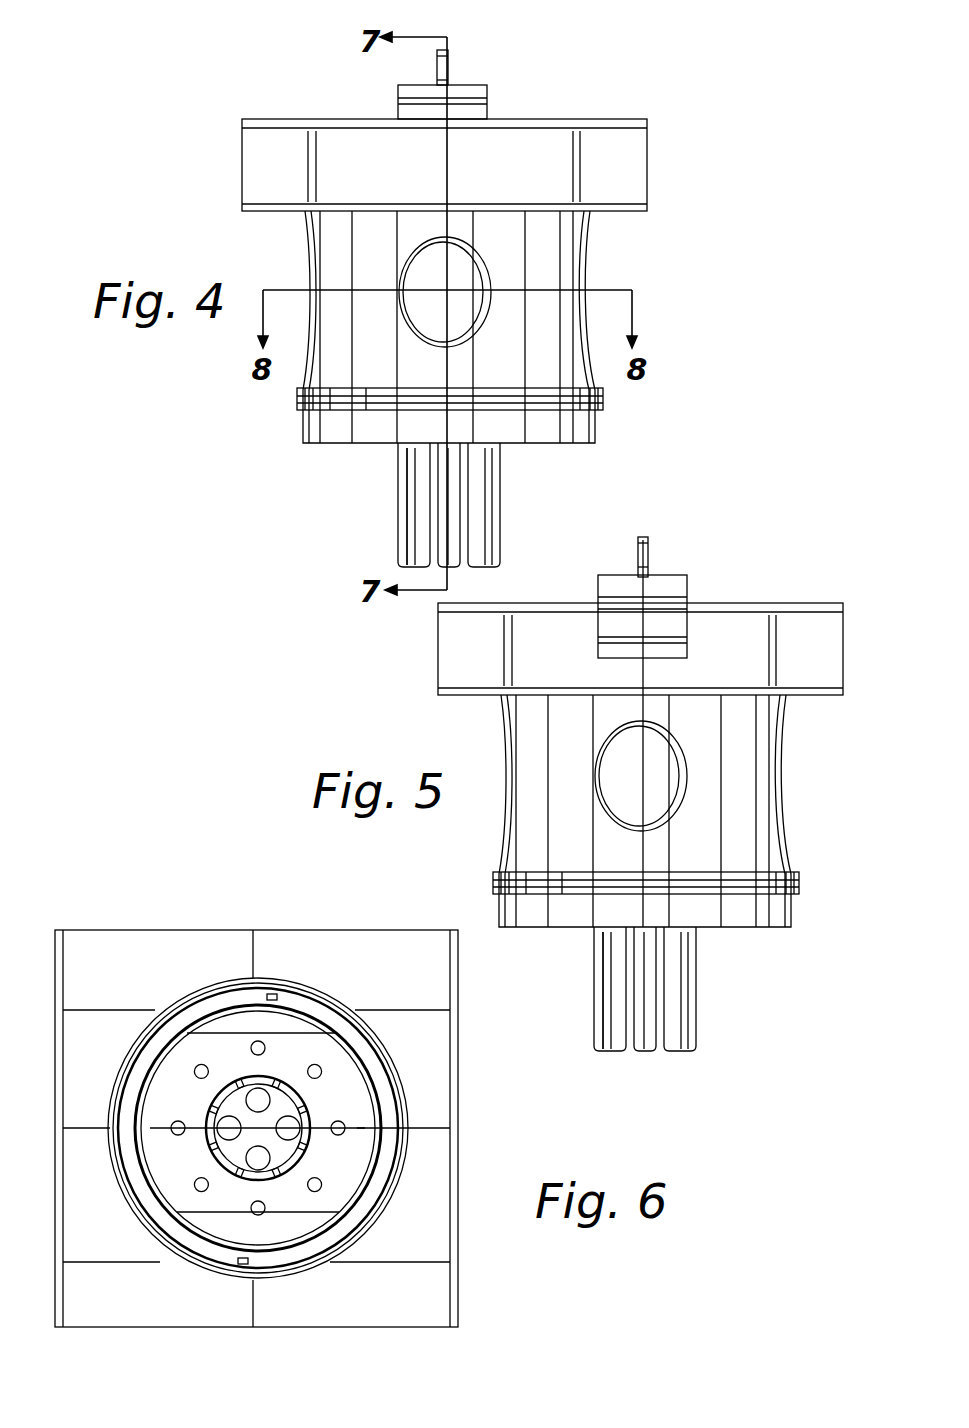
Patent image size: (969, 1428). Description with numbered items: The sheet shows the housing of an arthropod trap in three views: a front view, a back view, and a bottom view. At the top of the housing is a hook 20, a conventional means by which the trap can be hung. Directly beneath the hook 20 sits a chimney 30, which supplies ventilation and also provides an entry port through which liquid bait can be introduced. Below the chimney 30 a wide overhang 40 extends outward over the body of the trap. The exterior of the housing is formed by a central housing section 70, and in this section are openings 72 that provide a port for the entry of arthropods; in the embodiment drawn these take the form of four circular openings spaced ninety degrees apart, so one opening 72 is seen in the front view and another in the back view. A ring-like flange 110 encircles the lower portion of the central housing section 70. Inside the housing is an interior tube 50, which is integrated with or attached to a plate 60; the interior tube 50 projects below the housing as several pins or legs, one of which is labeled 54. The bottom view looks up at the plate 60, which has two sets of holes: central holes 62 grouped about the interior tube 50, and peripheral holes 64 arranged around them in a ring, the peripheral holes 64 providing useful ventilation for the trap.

In FIG. 4, the hook 20 is at (448, 72).
In FIG. 5, the hook 20 is at (648, 552).
In FIG. 4, the chimney 30 is at (490, 108).
In FIG. 5, the chimney 30 is at (690, 585).
In FIG. 4, the overhang 40 is at (647, 172).
In FIG. 5, the overhang 40 is at (845, 665).
In FIG. 6, the overhang 40 is at (425, 1305).
In FIG. 4, the interior tube 50 is at (500, 510).
In FIG. 5, the interior tube 50 is at (703, 1002).
In FIG. 6, the interior tube 50 is at (227, 1166).
In FIG. 4, the pin 54 is at (435, 482).
In FIG. 5, the pin 54 is at (617, 1000).
In FIG. 6, the plate 60 is at (222, 1050).
In FIG. 6, the central holes 62 is at (285, 1168).
In FIG. 6, the peripheral holes 64 is at (316, 1062).
In FIG. 4, the central housing section 70 is at (593, 228).
In FIG. 5, the central housing section 70 is at (787, 850).
In FIG. 4, the openings 72 is at (492, 272).
In FIG. 5, the openings 72 is at (690, 787).
In FIG. 4, the flange 110 is at (603, 400).
In FIG. 5, the flange 110 is at (805, 880).